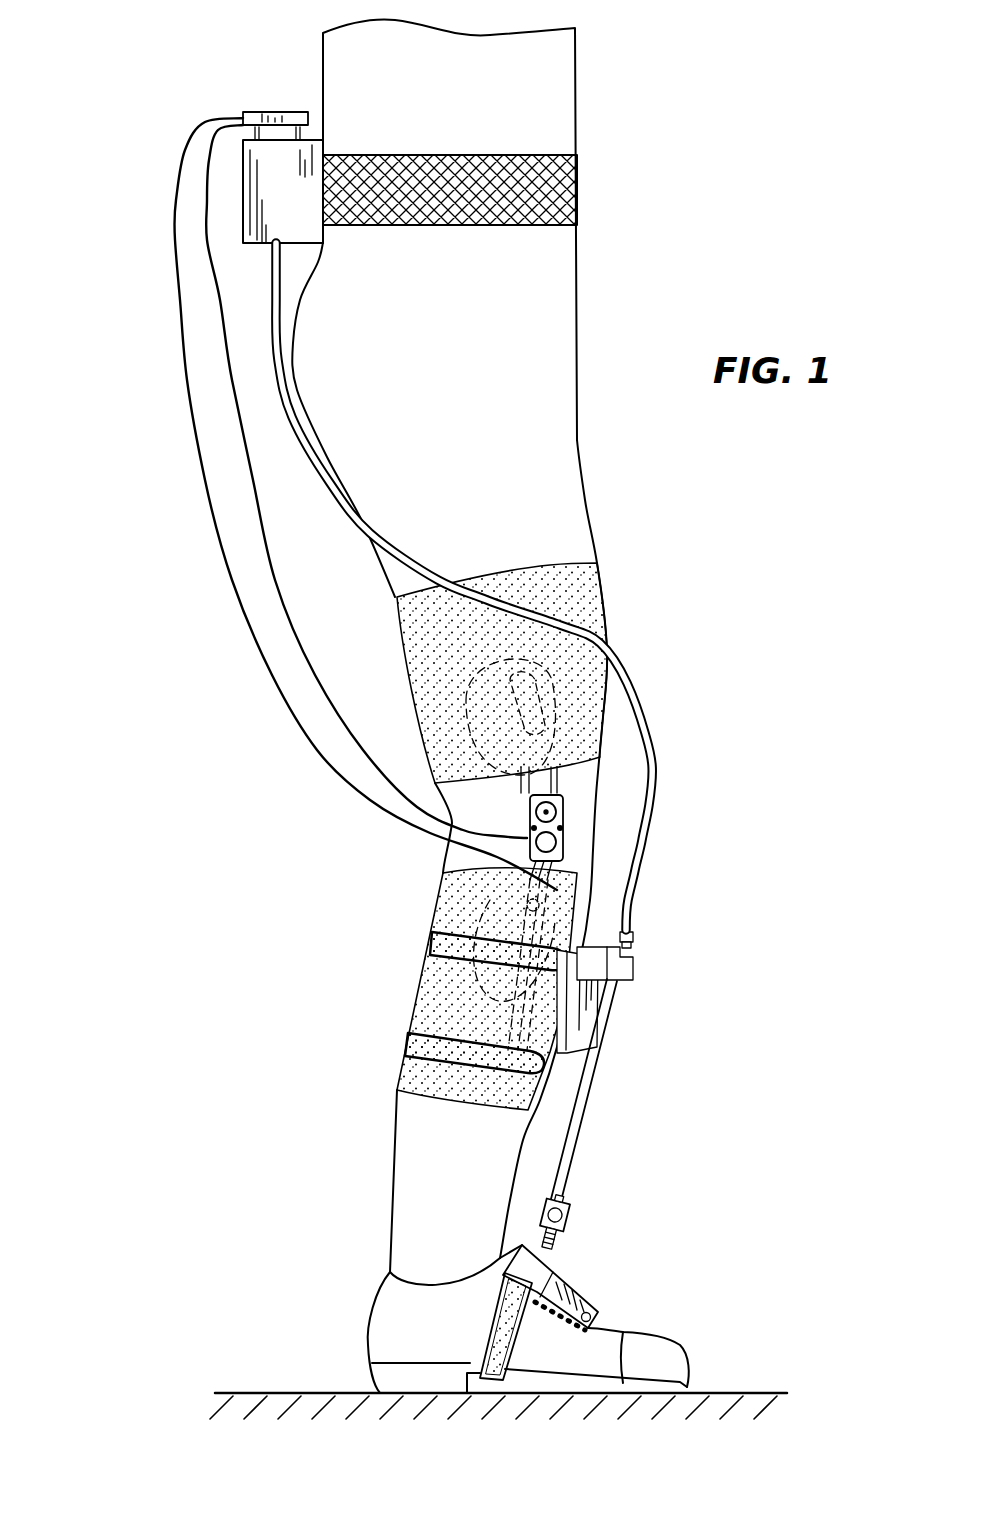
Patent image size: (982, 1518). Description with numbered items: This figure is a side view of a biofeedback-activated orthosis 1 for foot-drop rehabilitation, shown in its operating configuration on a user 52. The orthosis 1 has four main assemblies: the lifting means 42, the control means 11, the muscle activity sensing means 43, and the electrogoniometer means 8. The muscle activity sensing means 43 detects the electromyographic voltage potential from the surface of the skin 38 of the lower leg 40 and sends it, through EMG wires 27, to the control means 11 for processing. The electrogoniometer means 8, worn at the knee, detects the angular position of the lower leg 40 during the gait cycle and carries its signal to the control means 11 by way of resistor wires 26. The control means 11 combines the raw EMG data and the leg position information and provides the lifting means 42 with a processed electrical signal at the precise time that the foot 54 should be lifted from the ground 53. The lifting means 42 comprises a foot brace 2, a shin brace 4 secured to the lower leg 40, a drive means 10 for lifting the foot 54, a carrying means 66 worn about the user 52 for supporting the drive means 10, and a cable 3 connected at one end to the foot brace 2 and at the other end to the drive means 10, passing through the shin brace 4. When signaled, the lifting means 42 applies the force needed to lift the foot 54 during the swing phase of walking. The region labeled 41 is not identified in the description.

The biofeedback-activated orthosis 1 is at (712, 622).
The foot brace 2 is at (573, 1272).
The cable 3 is at (612, 1008).
The shin brace 4 is at (635, 968).
The electrogoniometer means 8 is at (575, 812).
The drive means 10 is at (242, 180).
The control means 11 is at (247, 108).
The resistor wires 26 is at (265, 553).
The EMG wires 27 is at (243, 628).
The skin 38 is at (578, 862).
The lower leg 40 is at (393, 1100).
The thigh 41 is at (592, 518).
The lifting means 42 is at (312, 504).
The muscle activity sensing means 43 is at (540, 1102).
The user 52 is at (577, 97).
The ground 53 is at (733, 1390).
The foot 54 is at (644, 1322).
The carrying means 66 is at (580, 200).